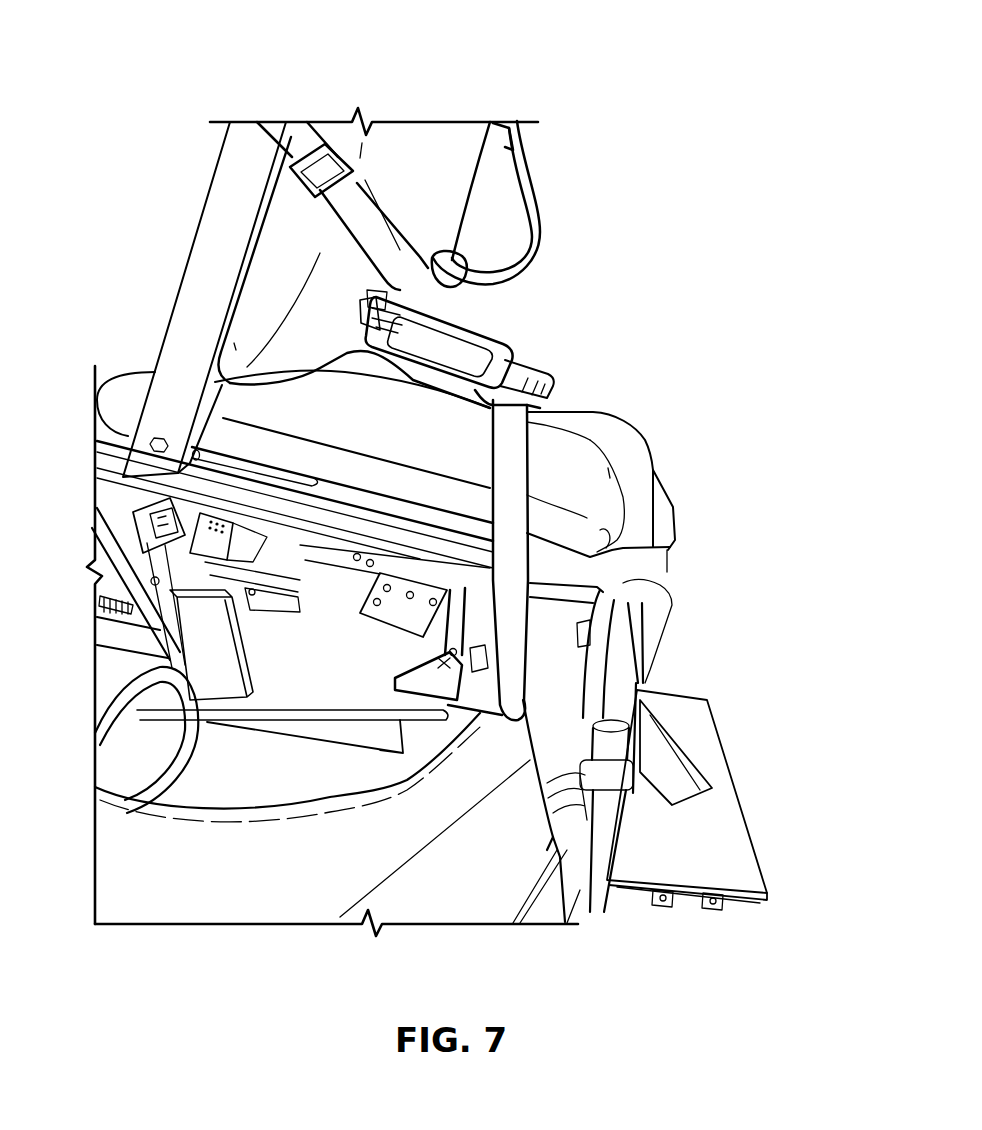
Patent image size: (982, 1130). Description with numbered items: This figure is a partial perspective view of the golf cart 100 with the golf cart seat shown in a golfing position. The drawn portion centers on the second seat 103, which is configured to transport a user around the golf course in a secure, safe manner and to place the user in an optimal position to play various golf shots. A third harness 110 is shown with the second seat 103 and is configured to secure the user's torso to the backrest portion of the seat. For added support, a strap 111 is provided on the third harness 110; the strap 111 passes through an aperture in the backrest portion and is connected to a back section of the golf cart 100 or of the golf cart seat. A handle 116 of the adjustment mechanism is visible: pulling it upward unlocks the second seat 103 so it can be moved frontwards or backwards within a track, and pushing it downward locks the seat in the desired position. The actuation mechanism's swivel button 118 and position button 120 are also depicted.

The golf cart 100 is at (755, 222).
The second seat 103 is at (405, 157).
The third harness 110 is at (527, 193).
The strap 111 is at (497, 121).
The handle 116 is at (305, 480).
The swivel button 118 is at (140, 522).
The position button 120 is at (205, 557).